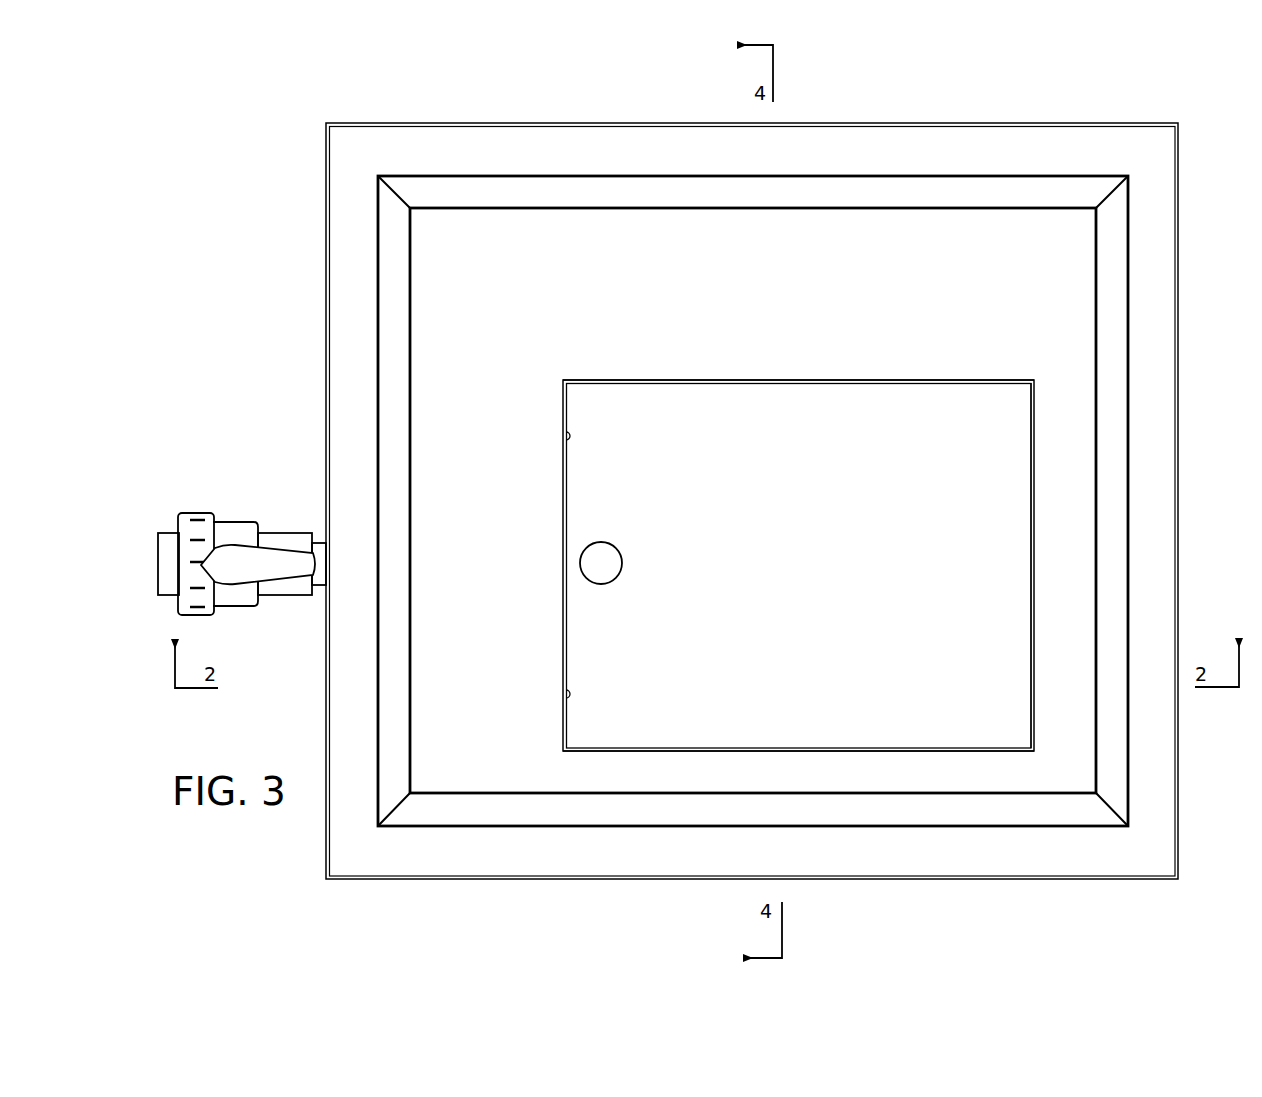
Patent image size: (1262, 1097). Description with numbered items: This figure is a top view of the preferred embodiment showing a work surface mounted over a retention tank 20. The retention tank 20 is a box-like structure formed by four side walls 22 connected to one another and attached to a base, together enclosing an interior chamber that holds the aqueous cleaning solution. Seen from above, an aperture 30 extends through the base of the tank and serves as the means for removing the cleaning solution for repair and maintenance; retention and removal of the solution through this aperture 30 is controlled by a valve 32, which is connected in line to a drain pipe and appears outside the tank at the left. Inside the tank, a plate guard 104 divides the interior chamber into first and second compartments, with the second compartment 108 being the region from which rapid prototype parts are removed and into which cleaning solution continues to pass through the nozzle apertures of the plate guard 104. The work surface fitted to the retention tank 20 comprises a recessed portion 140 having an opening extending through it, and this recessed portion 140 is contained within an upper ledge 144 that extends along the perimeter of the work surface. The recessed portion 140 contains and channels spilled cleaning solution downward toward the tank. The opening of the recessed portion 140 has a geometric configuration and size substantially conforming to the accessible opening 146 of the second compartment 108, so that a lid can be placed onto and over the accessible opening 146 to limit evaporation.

The retention tank 20 is at (920, 378).
The side wall 22 is at (758, 378).
The aperture 30 is at (622, 564).
The valve 32 is at (248, 522).
The plate guard 104 is at (566, 468).
The second compartment 108 is at (838, 554).
The recessed portion 140 is at (678, 208).
The upper ledge 144 is at (326, 377).
The accessible opening 146 is at (925, 752).